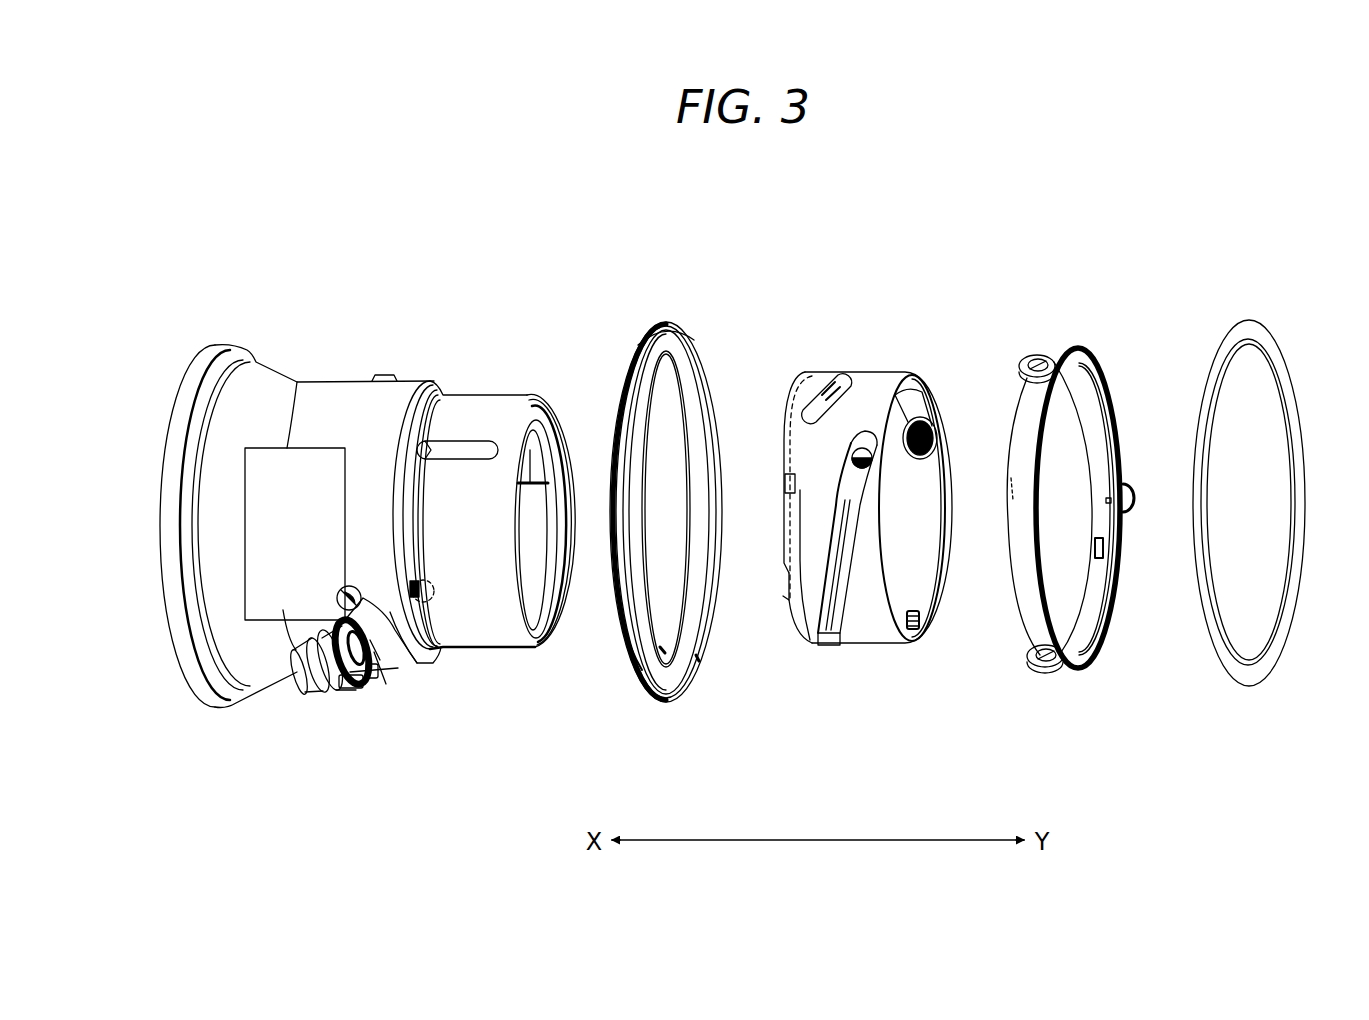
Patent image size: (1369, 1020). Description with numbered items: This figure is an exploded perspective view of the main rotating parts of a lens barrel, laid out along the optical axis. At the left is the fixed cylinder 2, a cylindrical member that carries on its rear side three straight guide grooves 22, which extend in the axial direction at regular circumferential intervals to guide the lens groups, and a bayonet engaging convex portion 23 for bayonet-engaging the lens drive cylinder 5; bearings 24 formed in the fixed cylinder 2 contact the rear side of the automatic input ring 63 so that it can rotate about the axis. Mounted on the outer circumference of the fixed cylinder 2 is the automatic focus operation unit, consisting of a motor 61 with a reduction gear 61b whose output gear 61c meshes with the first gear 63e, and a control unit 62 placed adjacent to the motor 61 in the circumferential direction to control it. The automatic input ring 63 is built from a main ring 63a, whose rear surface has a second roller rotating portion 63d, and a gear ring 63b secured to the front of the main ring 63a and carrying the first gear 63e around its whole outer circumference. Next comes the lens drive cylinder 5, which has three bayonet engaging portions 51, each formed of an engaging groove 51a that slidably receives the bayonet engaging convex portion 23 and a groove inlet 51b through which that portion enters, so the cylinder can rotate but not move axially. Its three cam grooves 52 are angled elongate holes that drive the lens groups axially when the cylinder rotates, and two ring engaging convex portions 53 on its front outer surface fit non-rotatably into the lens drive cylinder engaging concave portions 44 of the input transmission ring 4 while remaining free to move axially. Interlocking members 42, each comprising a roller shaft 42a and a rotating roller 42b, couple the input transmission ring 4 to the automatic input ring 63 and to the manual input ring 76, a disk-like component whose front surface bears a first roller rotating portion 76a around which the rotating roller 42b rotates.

The fixed cylinder 2 is at (434, 372).
The straight guide grooves 22 is at (505, 432).
The bayonet engaging convex portion 23 is at (468, 450).
The bearings 24 is at (395, 376).
The input transmission ring 4 is at (1080, 346).
The interlocking members 42 is at (1050, 360).
The roller shaft 42a is at (1039, 357).
The rotating roller 42b is at (1024, 364).
The lens drive cylinder engaging concave portions 44 is at (1011, 483).
The lens drive cylinder 5 is at (890, 364).
The bayonet engaging portions 51 is at (812, 712).
The engaging groove 51a is at (781, 533).
The groove inlet 51b is at (782, 582).
The cam grooves 52 is at (848, 372).
The ring engaging convex portions 53 is at (785, 482).
The motor 61 is at (323, 692).
The reduction gear 61b is at (362, 716).
The output gear 61c is at (380, 680).
The control unit 62 is at (264, 607).
The automatic input ring 63 is at (688, 305).
The main ring 63a is at (674, 326).
The gear ring 63b is at (626, 340).
The second roller rotating portion 63d is at (686, 350).
The first gear 63e is at (616, 608).
The manual input ring 76 is at (1246, 320).
The first roller rotating portion 76a is at (1208, 350).